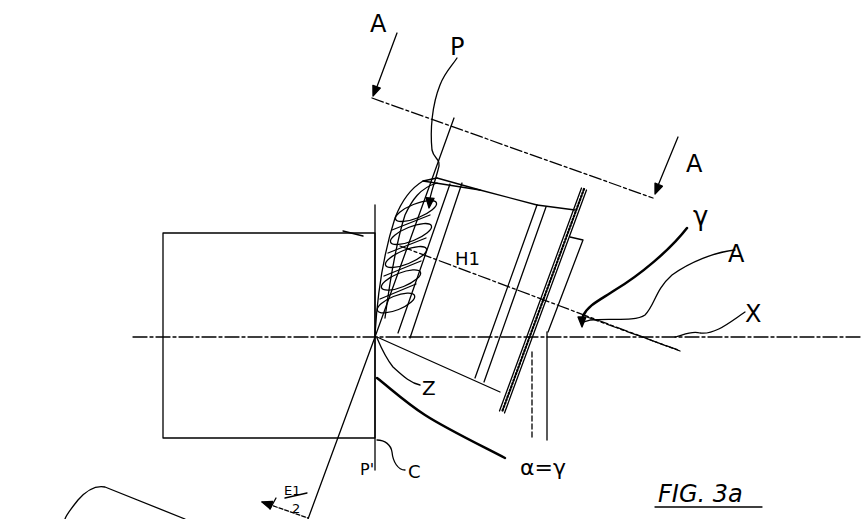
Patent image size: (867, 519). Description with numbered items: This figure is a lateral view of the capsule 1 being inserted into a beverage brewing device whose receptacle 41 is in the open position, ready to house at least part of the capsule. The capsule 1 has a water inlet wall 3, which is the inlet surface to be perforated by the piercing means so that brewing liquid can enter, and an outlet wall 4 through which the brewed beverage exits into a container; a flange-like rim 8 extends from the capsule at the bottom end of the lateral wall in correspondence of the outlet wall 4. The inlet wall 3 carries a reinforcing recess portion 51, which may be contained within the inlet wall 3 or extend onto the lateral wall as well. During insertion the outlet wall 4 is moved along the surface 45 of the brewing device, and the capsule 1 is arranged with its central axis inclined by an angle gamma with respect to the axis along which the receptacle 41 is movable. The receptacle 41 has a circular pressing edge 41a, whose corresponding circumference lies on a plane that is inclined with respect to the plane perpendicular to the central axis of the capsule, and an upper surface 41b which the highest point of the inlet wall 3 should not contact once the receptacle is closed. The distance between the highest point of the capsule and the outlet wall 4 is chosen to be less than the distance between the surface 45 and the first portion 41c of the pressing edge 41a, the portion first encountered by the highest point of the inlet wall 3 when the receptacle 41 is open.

The capsule 1 is at (486, 176).
The water inlet wall 3 is at (374, 192).
The outlet wall 4 is at (538, 361).
The flange-like rim 8 is at (513, 385).
The surface 45 is at (568, 258).
The recess portion 51 is at (433, 183).
The receptacle 41 is at (183, 259).
The pressing edge 41a is at (386, 422).
The upper surface of the receptacle 41b is at (144, 336).
The first portion of the pressing edge 41c is at (366, 223).